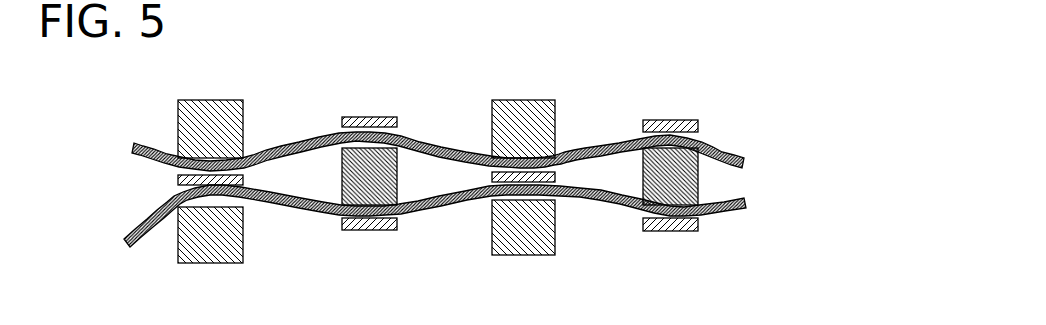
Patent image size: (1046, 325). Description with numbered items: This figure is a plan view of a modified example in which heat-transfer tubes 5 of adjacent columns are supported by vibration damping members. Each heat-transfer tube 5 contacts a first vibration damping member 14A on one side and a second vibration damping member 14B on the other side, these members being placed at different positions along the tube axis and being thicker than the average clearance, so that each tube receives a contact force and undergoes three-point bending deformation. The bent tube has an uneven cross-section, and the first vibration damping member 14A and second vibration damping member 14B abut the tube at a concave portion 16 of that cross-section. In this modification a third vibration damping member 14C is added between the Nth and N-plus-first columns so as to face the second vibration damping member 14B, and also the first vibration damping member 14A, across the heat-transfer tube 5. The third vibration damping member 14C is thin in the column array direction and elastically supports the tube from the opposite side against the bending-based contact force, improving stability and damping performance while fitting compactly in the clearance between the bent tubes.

The heat-transfer tube 5 is at (731, 153).
The first vibration damping member 14A is at (245, 122).
The second vibration damping member 14B is at (397, 186).
The third vibration damping member 14C is at (178, 181).
The concave portion 16 is at (170, 147).